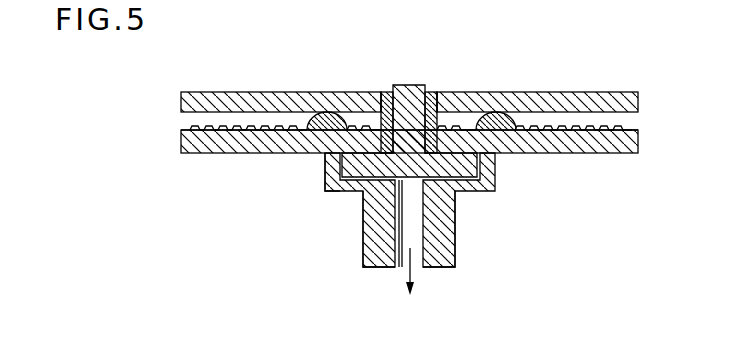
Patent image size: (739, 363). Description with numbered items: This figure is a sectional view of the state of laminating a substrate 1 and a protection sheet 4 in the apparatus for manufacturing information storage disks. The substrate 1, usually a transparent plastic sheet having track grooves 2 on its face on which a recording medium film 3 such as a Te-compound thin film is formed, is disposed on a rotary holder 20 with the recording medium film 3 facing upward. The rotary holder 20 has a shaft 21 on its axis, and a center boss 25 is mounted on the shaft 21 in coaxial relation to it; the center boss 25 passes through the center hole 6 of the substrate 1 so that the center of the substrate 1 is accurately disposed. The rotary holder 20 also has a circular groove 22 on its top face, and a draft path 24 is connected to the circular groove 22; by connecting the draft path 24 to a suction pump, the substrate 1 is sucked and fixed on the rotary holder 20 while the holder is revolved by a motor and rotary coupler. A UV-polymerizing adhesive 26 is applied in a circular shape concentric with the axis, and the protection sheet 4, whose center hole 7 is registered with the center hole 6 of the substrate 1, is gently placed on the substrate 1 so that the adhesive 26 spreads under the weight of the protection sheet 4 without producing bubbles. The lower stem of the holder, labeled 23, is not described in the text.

The substrate 1 is at (617, 145).
The track grooves 2 is at (552, 137).
The recording medium film 3 is at (628, 126).
The protection sheet 4 is at (604, 100).
The center hole of the substrate 6 is at (363, 92).
The center hole of the protection sheet 7 is at (389, 92).
The rotary holder 20 is at (477, 187).
The shaft 21 is at (405, 85).
The circular groove 22 is at (335, 165).
The housing stem 23 is at (447, 260).
The draft path 24 is at (352, 192).
The center boss 25 is at (433, 92).
The adhesive 26 is at (490, 114).